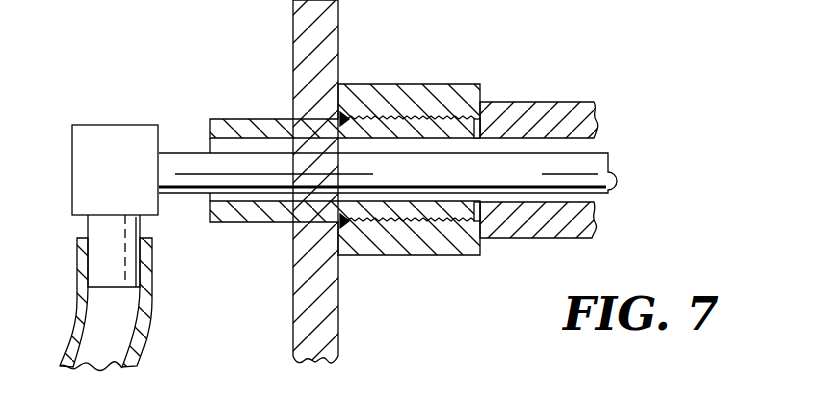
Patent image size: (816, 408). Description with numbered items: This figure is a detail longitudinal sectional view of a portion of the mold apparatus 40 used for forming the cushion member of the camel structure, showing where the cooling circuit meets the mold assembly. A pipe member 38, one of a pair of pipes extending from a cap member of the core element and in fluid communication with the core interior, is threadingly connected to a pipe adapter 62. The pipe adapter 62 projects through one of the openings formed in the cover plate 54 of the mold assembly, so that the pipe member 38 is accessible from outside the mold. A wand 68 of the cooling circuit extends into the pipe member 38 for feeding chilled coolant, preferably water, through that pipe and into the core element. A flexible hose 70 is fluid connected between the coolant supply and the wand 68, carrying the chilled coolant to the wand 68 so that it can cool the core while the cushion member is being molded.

The pipe member 38 is at (559, 101).
The mold apparatus 40 is at (430, 316).
The cover plate 54 is at (292, 13).
The pipe adapter 62 is at (218, 118).
The wand 68 is at (125, 124).
The flexible hose 70 is at (151, 331).